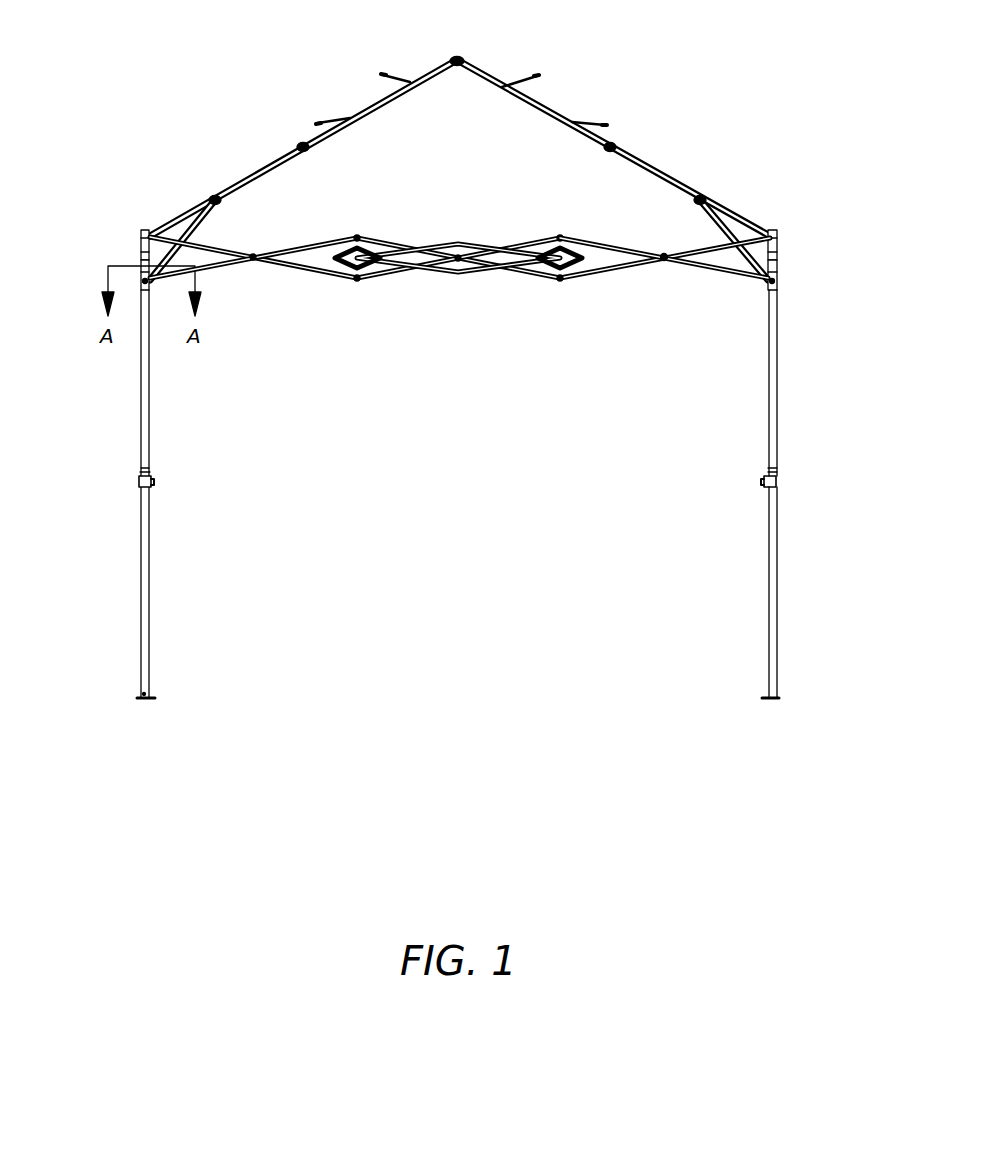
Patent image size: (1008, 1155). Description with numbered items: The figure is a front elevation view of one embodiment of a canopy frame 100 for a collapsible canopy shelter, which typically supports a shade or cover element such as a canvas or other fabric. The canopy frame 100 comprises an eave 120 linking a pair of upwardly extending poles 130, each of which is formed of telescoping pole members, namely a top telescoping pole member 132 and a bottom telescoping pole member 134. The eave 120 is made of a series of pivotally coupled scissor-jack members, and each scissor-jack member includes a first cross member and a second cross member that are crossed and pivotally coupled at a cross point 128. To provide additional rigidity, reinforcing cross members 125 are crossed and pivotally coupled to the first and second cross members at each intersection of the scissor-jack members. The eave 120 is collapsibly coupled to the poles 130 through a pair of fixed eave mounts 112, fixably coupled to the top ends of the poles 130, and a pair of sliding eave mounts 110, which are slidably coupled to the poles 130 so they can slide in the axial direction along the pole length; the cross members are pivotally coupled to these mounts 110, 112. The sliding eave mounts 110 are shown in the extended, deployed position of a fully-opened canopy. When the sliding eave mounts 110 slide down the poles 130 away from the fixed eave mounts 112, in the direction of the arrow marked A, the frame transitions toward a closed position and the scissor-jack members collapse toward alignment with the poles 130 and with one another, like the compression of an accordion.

The canopy frame 100 is at (686, 52).
The sliding eave mount 110 is at (140, 262).
The fixed eave mount 112 is at (143, 233).
The eave 120 is at (543, 237).
The reinforcing cross member 125 is at (368, 253).
The cross point 128 is at (662, 256).
The upwardly extending pole 130 is at (124, 467).
The top telescoping pole member 132 is at (772, 387).
The bottom telescoping pole member 134 is at (772, 582).